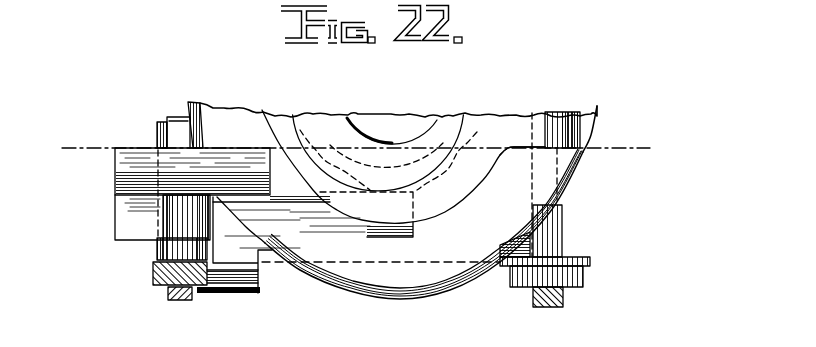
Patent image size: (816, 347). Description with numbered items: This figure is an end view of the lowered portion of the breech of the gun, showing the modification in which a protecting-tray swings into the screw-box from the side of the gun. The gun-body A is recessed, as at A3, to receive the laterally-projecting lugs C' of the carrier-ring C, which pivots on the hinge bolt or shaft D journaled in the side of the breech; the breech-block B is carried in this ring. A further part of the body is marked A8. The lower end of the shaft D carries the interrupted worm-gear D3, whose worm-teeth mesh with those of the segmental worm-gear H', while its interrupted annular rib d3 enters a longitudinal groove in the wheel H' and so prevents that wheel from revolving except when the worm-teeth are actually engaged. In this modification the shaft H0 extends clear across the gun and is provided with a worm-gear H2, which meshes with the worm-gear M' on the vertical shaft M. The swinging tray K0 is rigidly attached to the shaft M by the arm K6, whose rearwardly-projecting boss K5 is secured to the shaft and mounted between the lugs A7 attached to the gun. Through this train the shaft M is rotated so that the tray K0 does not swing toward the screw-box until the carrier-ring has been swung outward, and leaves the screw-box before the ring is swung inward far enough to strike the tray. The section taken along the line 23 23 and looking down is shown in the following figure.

The section line 23 23 is at (356, 155).
The gun-body A is at (392, 200).
The recesses for the lugs of the carrier-ring A3 is at (585, 132).
The lugs A7 is at (157, 128).
The body hub A8 is at (327, 228).
The breech-block B is at (462, 126).
The carrier-ring C is at (521, 118).
The laterally-projecting lugs C' is at (565, 113).
The vertical shaft M is at (153, 111).
The worm-gear M' is at (137, 284).
The swinging protecting-tray K0 is at (150, 158).
The rearwardly-projecting boss K5 is at (180, 213).
The arm K6 is at (130, 226).
The worm-gear H2 is at (172, 298).
The shaft H0 is at (277, 278).
The segmental worm-gear H' is at (541, 316).
The hinge bolt or shaft D is at (555, 230).
The interrupted annular rib d3 is at (587, 262).
The interrupted worm-gear D3 is at (583, 275).